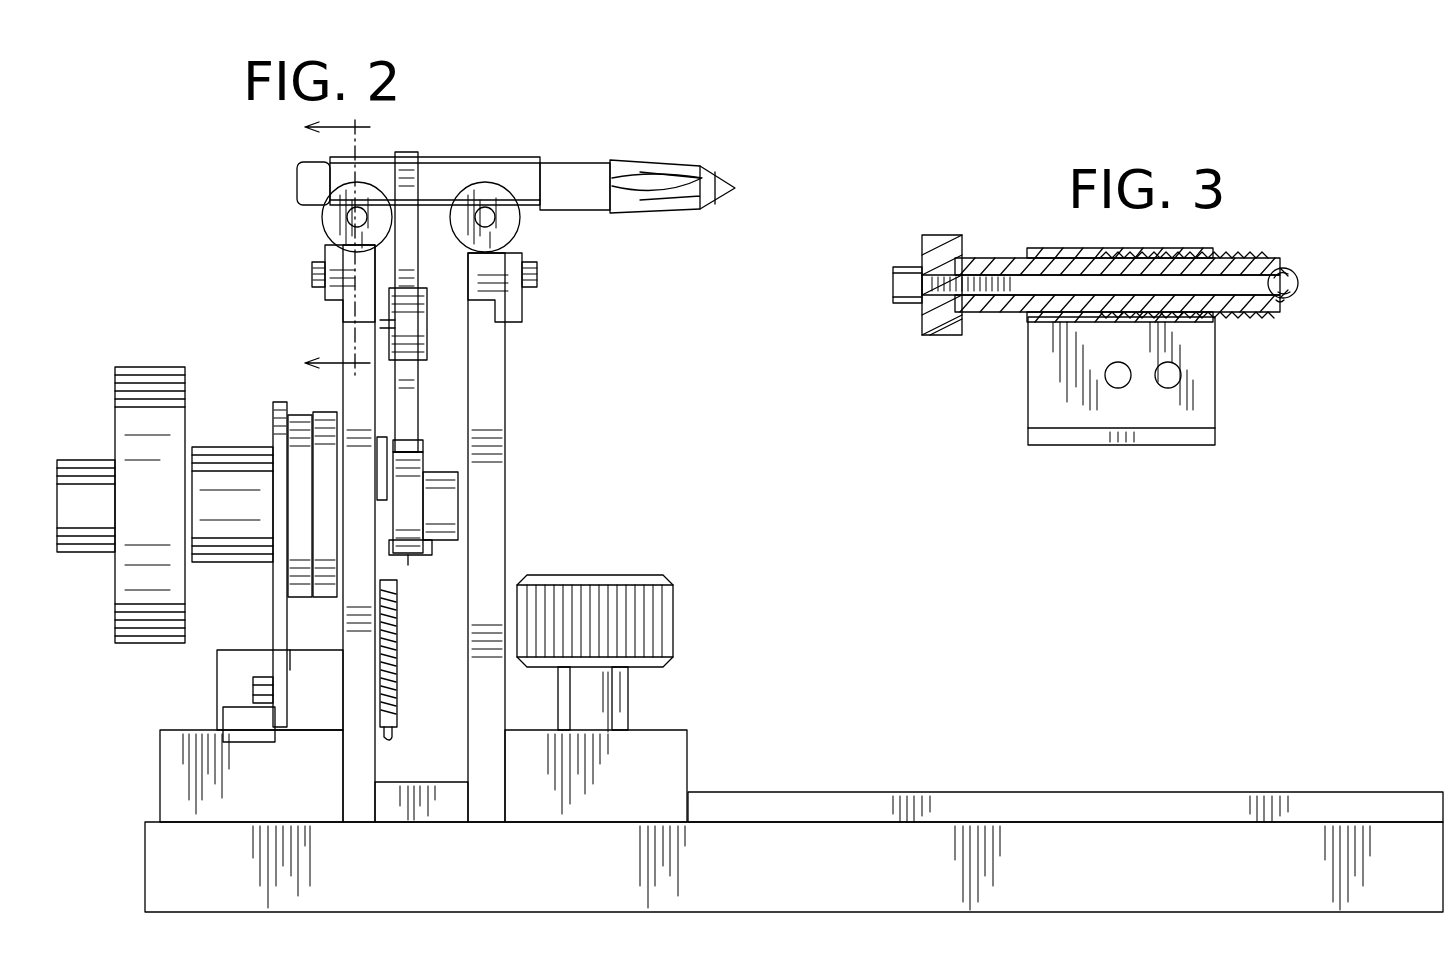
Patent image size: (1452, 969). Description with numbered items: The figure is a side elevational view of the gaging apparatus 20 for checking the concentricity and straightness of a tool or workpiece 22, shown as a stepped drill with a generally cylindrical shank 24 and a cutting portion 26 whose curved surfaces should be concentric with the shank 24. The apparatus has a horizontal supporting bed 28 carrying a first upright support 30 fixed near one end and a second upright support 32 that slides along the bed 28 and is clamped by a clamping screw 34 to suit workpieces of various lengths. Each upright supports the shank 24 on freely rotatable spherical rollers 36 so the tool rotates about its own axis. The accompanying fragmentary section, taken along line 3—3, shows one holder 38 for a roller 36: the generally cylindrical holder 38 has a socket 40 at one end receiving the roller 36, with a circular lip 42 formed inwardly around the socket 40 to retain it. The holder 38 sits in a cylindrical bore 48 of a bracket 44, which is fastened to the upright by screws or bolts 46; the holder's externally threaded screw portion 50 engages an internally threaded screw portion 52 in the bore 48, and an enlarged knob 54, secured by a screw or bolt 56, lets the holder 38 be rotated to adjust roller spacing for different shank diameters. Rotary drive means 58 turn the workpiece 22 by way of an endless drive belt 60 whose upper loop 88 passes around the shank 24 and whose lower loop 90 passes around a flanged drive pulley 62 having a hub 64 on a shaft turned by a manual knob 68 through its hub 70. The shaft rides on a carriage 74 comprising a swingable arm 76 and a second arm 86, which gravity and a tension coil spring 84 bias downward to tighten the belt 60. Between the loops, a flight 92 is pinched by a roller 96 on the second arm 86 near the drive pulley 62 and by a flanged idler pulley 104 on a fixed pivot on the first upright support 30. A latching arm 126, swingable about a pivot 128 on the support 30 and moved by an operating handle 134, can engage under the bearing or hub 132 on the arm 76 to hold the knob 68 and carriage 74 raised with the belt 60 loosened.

In FIG. 2, the section line 3— 3 is at (337, 248).
In FIG. 2, the gaging apparatus 20 is at (212, 313).
In FIG. 2, the workpiece 22 is at (527, 146).
In FIG. 2, the cylindrical shank 24 is at (493, 157).
In FIG. 2, the cutting portion 26 is at (665, 149).
In FIG. 2, the supporting bed 28 is at (959, 768).
In FIG. 2, the first upright support 30 is at (360, 764).
In FIG. 2, the second upright support 32 is at (490, 415).
In FIG. 2, the clamping screw 34 is at (586, 575).
In FIG. 3, the spherical roller 36 is at (1296, 278).
In FIG. 3, the holder 38 is at (1261, 241).
In FIG. 3, the socket 40 is at (1295, 292).
In FIG. 3, the circular lip 42 is at (1276, 302).
In FIG. 2, the bracket 44 is at (327, 310).
In FIG. 3, the bracket 44 is at (1028, 398).
In FIG. 2, the screws or bolts 46 is at (312, 272).
In FIG. 3, the cylindrical bore 48 is at (1030, 309).
In FIG. 3, the externally threaded screw portion 50 is at (1246, 318).
In FIG. 3, the internally threaded screw portion 52 is at (1180, 267).
In FIG. 3, the knob 54 is at (940, 234).
In FIG. 3, the screw or bolt 56 is at (893, 288).
In FIG. 2, the rotary drive means 58 is at (433, 701).
In FIG. 2, the drive belt 60 is at (448, 393).
In FIG. 2, the flanged drive pulley 62 is at (430, 552).
In FIG. 2, the hub 64 is at (446, 507).
In FIG. 2, the knob 68 is at (139, 366).
In FIG. 2, the hub 70 is at (96, 552).
In FIG. 2, the carriage 74 is at (290, 617).
In FIG. 2, the arm 76 is at (320, 597).
In FIG. 2, the tension coil spring 84 is at (398, 671).
In FIG. 2, the second arm 86 is at (395, 445).
In FIG. 2, the upper loop 88 is at (418, 152).
In FIG. 2, the lower loop 90 is at (404, 555).
In FIG. 2, the flight 92 is at (426, 381).
In FIG. 2, the roller 96 is at (422, 455).
In FIG. 2, the flanged idler pulley 104 is at (426, 355).
In FIG. 2, the latching arm 126 is at (296, 402).
In FIG. 2, the pivot 128 is at (253, 688).
In FIG. 2, the bearing or hub 132 is at (248, 445).
In FIG. 2, the operating handle 134 is at (233, 726).